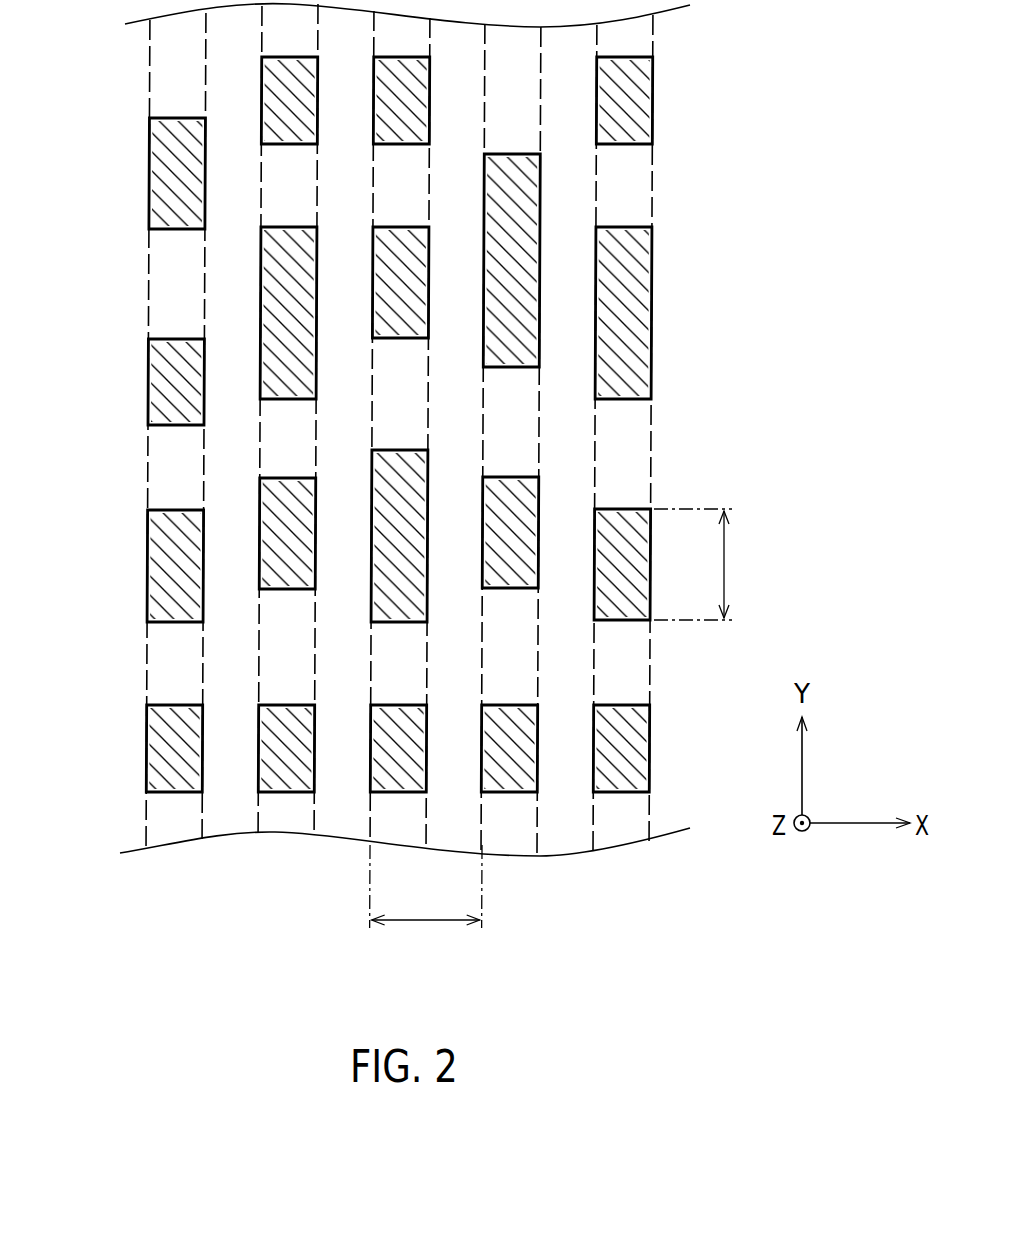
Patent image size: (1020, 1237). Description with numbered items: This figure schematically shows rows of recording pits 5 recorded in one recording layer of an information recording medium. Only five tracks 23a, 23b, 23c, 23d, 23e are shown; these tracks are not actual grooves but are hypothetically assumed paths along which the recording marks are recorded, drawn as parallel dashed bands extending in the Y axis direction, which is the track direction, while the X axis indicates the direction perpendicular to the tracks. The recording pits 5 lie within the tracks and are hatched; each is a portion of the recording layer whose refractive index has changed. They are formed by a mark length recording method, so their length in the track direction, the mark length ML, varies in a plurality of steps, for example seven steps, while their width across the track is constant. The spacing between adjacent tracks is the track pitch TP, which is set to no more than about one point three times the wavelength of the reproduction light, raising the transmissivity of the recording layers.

The recording pit 5 is at (166, 565).
The track 23a is at (126, 476).
The track 23b is at (258, 812).
The track 23c is at (368, 812).
The track 23d is at (540, 813).
The track 23e is at (650, 810).
The mark length ML is at (708, 564).
The track pitch TP is at (426, 901).